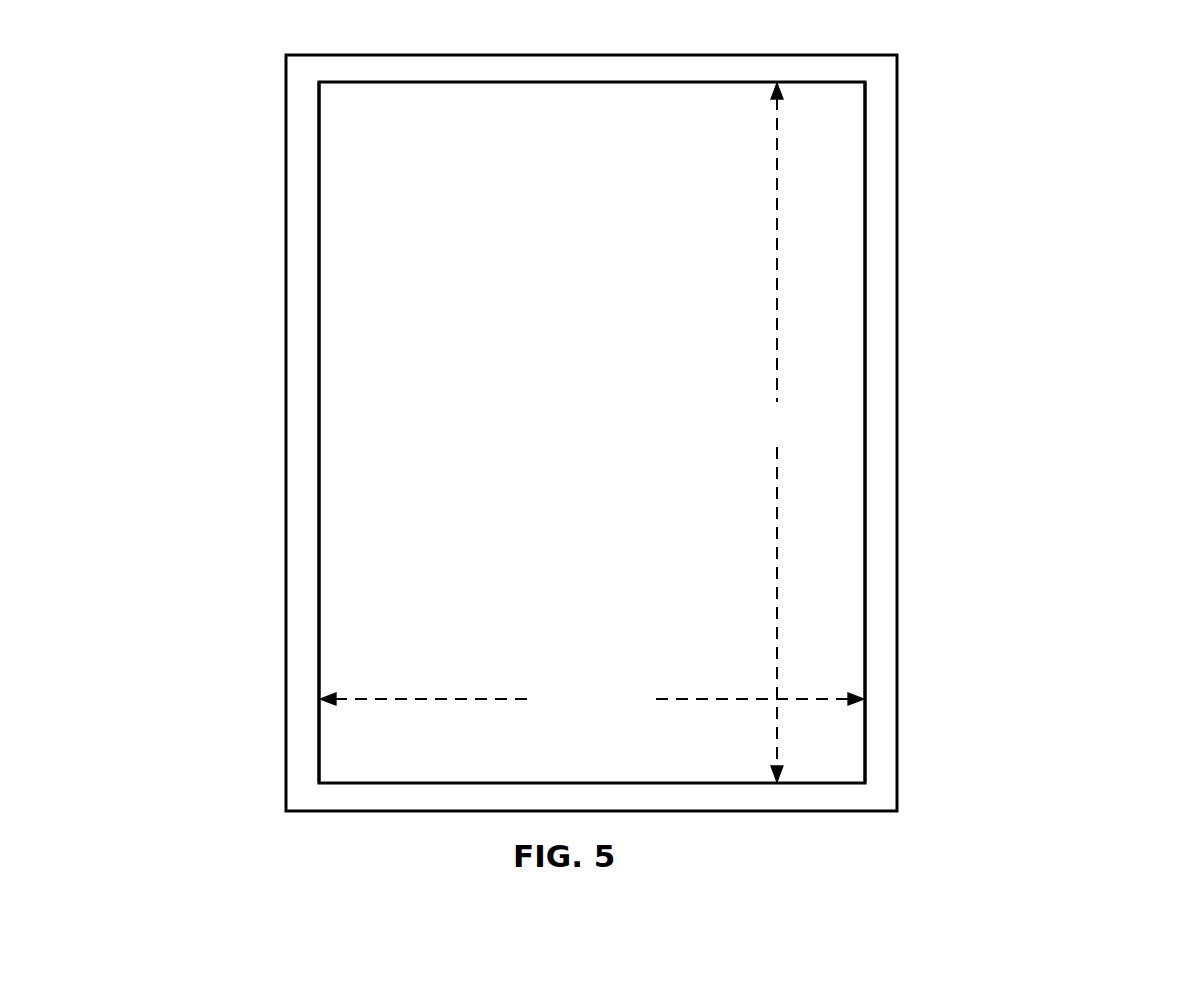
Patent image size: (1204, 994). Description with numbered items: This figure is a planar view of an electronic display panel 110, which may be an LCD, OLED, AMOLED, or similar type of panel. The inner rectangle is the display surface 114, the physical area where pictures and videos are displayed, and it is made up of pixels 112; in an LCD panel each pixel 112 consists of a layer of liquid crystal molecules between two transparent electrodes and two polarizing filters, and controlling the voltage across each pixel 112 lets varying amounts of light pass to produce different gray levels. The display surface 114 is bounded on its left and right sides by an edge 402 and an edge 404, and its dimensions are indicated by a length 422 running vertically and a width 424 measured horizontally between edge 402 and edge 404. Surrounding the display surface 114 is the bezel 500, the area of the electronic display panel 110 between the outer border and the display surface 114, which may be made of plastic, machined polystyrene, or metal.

The electronic display panel 110 is at (650, 433).
The pixels 112 is at (373, 587).
The display surface 114 is at (570, 440).
The edge 402 is at (319, 743).
The edge 404 is at (865, 213).
The length 422 is at (839, 444).
The width 424 is at (648, 709).
The bezel 500 is at (301, 461).